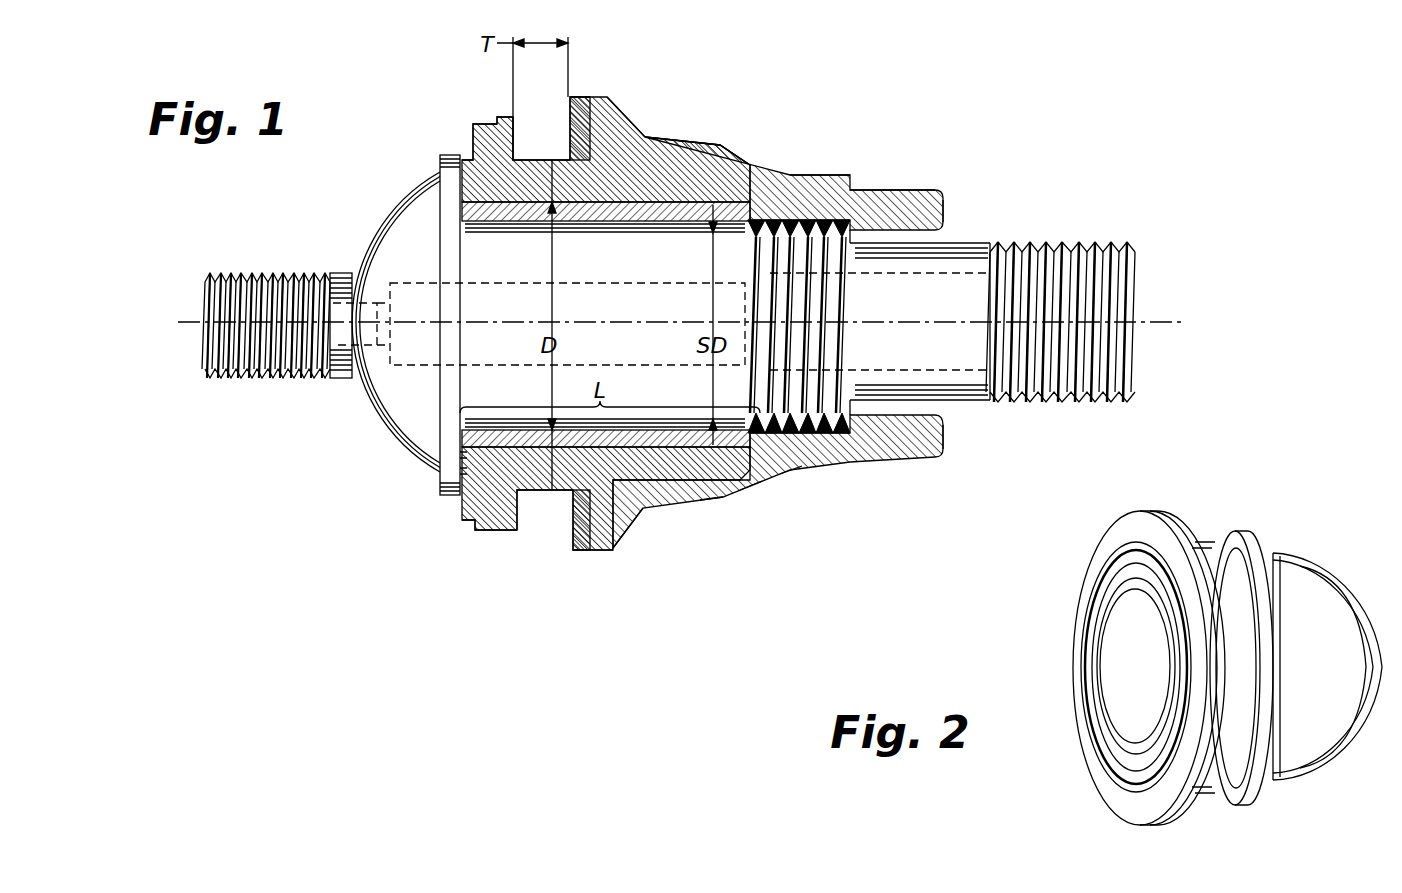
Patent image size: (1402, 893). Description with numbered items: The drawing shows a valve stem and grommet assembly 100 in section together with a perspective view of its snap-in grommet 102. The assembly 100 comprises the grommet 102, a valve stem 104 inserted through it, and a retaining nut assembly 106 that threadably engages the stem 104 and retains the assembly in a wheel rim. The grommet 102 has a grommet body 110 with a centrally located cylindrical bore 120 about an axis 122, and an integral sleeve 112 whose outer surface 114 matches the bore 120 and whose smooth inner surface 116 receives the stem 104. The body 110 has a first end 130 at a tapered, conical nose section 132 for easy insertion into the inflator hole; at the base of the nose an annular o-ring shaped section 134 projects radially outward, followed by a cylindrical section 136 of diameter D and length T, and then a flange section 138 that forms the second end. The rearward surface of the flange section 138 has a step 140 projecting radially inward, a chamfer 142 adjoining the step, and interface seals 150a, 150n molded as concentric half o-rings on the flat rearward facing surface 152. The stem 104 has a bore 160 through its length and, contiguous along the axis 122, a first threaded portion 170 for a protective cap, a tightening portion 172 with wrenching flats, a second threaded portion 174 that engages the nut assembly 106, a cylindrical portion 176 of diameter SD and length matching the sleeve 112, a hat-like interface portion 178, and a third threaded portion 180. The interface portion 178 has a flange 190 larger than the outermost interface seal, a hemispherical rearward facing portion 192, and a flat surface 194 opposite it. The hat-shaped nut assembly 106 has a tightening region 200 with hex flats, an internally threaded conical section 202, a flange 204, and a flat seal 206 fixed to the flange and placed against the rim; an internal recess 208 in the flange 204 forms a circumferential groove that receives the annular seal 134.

In FIG. 1, the valve stem and grommet assembly 100 is at (718, 90).
In FIG. 1, the grommet 102 is at (541, 160).
In FIG. 2, the grommet 102 is at (1299, 534).
In FIG. 1, the valve stem 104 is at (983, 246).
In FIG. 1, the retaining nut assembly 106 is at (841, 470).
In FIG. 1, the grommet body 110 is at (650, 513).
In FIG. 1, the integral sleeve 112 is at (753, 478).
In FIG. 1, the outer surface 114 is at (724, 498).
In FIG. 1, the inner surface 116 is at (670, 446).
In FIG. 1, the bore 120 is at (545, 228).
In FIG. 1, the axis 122 is at (570, 224).
In FIG. 1, the first end 130 is at (788, 470).
In FIG. 1, the nose section 132 is at (690, 165).
In FIG. 2, the nose section 132 is at (1268, 789).
In FIG. 1, the annular section 134 is at (580, 552).
In FIG. 2, the annular section 134 is at (1230, 810).
In FIG. 1, the cylindrical section 136 is at (519, 494).
In FIG. 2, the cylindrical section 136 is at (1224, 536).
In FIG. 1, the flange section 138 is at (462, 542).
In FIG. 2, the flange section 138 is at (1135, 832).
In FIG. 1, the step 140 is at (505, 112).
In FIG. 2, the step 140 is at (1165, 516).
In FIG. 1, the chamfer 142 is at (455, 505).
In FIG. 1, the interface seal 150a is at (462, 458).
In FIG. 2, the interface seal 150a is at (1092, 713).
In FIG. 1, the interface seal 150n is at (465, 474).
In FIG. 2, the interface seal 150n is at (1098, 765).
In FIG. 1, the rearward facing surface 152 is at (463, 490).
In FIG. 2, the rearward facing surface 152 is at (1110, 543).
In FIG. 1, the bore 160 is at (205, 315).
In FIG. 1, the first threaded portion 170 is at (995, 409).
In FIG. 1, the tightening portion 172 is at (945, 422).
In FIG. 1, the second threaded portion 174 is at (832, 448).
In FIG. 1, the cylindrical portion 176 is at (745, 234).
In FIG. 1, the interface portion 178 is at (355, 84).
In FIG. 1, the third threaded portion 180 is at (205, 409).
In FIG. 1, the flange 190 is at (438, 147).
In FIG. 1, the hemispherical rearward facing portion 192 is at (352, 212).
In FIG. 1, the flat surface 194 is at (460, 440).
In FIG. 1, the tightening region 200 is at (855, 174).
In FIG. 1, the conical section 202 is at (850, 177).
In FIG. 1, the flange 204 is at (578, 84).
In FIG. 1, the flat seal 206 is at (572, 108).
In FIG. 1, the internal recess 208 is at (610, 548).